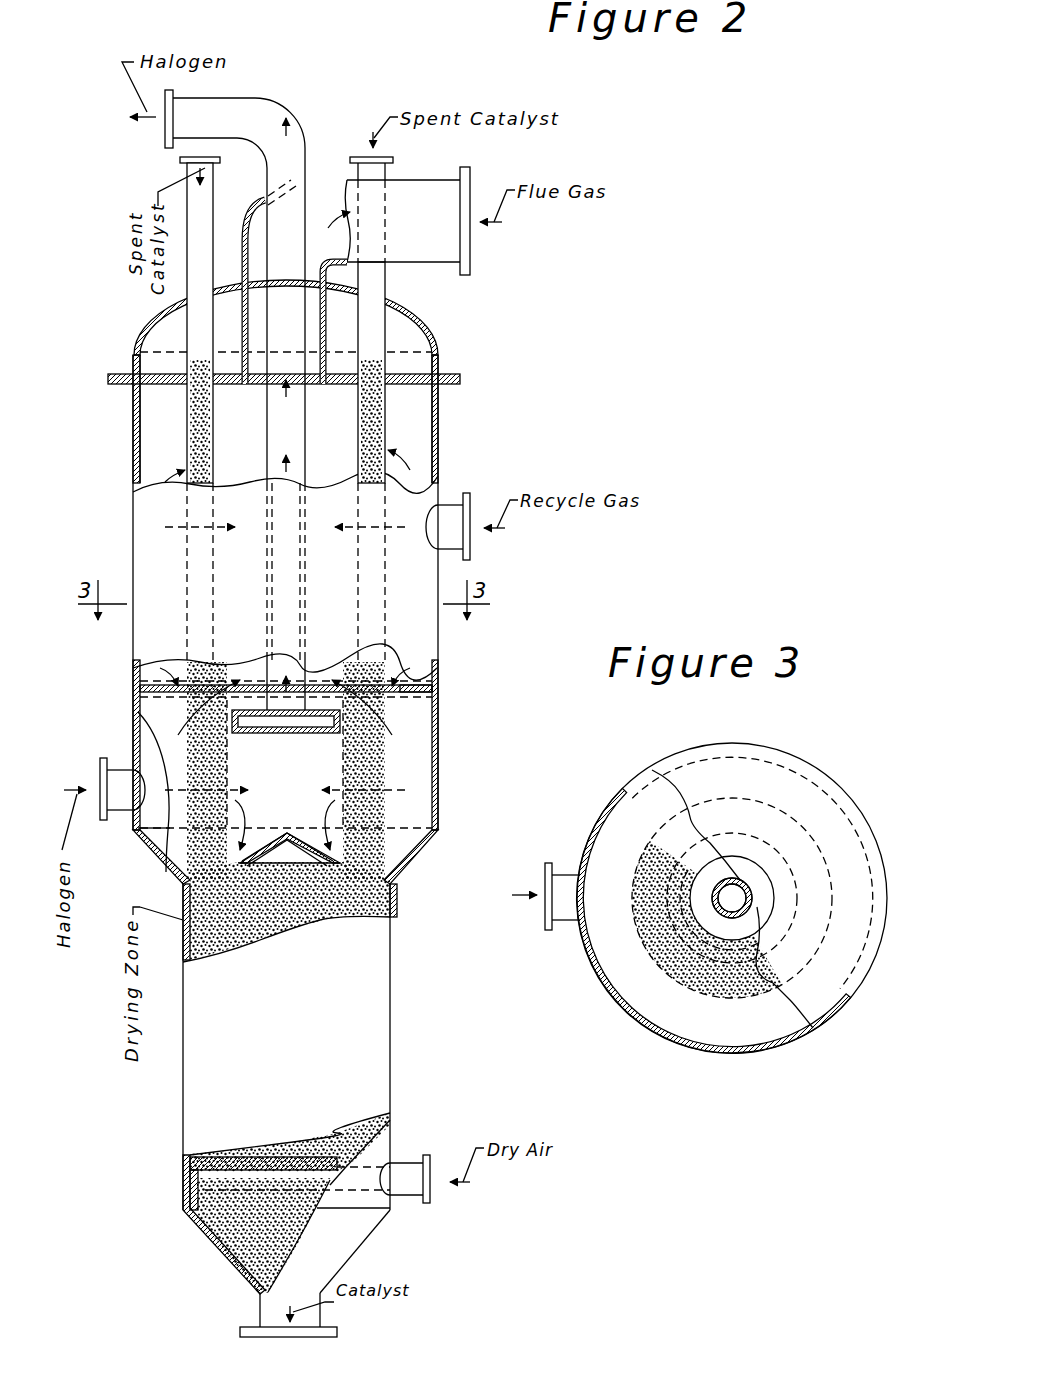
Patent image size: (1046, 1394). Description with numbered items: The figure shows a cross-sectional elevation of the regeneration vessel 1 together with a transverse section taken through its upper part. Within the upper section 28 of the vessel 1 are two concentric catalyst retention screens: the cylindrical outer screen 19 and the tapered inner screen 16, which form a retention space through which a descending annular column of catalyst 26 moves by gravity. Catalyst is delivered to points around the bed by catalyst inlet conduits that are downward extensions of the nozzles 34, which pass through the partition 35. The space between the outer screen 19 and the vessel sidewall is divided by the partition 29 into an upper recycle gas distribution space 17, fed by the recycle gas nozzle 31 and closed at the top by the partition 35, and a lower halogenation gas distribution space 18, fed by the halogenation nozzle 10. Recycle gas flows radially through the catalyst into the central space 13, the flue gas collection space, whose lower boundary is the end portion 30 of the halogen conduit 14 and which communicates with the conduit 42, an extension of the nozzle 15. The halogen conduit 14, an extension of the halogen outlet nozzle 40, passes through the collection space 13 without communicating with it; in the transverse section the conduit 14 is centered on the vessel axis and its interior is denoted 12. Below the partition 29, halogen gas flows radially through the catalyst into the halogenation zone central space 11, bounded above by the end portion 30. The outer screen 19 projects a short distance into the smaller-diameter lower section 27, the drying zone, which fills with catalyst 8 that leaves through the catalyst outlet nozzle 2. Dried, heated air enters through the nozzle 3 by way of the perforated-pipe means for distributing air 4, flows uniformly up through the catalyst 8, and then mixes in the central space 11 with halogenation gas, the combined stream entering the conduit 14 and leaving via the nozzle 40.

In FIG. 2, the regeneration vessel 1 is at (131, 450).
In FIG. 2, the catalyst outlet nozzle 2 is at (258, 1316).
In FIG. 2, the nozzle 3 is at (403, 1197).
In FIG. 2, the means for distributing air 4 is at (232, 1157).
In FIG. 2, the catalyst 8 is at (220, 935).
In FIG. 2, the halogenation nozzle 10 is at (108, 758).
In FIG. 3, the halogenation nozzle 10 is at (563, 862).
In FIG. 2, the halogenation zone central space 11 is at (295, 785).
In FIG. 2, the interior of conduit 14 12 is at (295, 427).
In FIG. 3, the interior of conduit 14 12 is at (743, 900).
In FIG. 2, the central space 13 is at (248, 470).
In FIG. 3, the central space 13 is at (740, 941).
In FIG. 2, the halogen conduit 14 is at (316, 366).
In FIG. 3, the halogen conduit 14 is at (728, 880).
In FIG. 2, the nozzle 15 is at (470, 249).
In FIG. 2, the inner screen 16 is at (357, 423).
In FIG. 3, the inner screen 16 is at (693, 860).
In FIG. 2, the recycle gas distribution space 17 is at (157, 677).
In FIG. 3, the recycle gas distribution space 17 is at (648, 814).
In FIG. 2, the halogenation gas distribution space 18 is at (162, 707).
In FIG. 2, the outer screen 19 is at (190, 446).
In FIG. 3, the outer screen 19 is at (750, 993).
In FIG. 2, the annular column of catalyst 26 is at (188, 423).
In FIG. 3, the annular column of catalyst 26 is at (698, 970).
In FIG. 2, the lower section 27 is at (392, 1040).
In FIG. 2, the upper section 28 is at (438, 775).
In FIG. 3, the upper section 28 is at (690, 745).
In FIG. 2, the partition 29 is at (432, 698).
In FIG. 2, the end portion of conduit 14 30 is at (273, 736).
In FIG. 3, the end portion of conduit 14 30 is at (787, 887).
In FIG. 2, the recycle gas nozzle 31 is at (468, 493).
In FIG. 2, the nozzles 34 is at (214, 196).
In FIG. 2, the partition 35 is at (170, 378).
In FIG. 2, the halogen outlet nozzle 40 is at (285, 108).
In FIG. 2, the conduit 42 is at (322, 340).